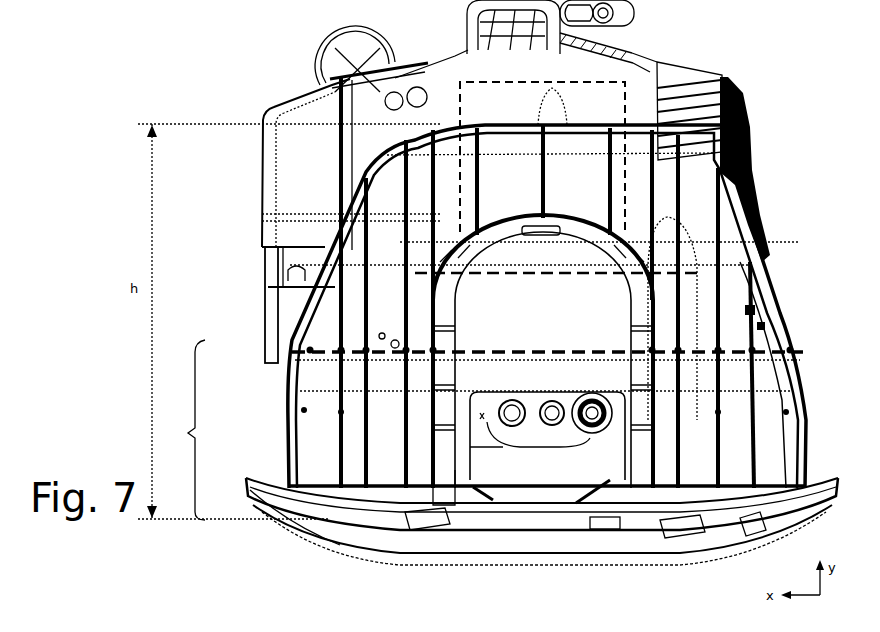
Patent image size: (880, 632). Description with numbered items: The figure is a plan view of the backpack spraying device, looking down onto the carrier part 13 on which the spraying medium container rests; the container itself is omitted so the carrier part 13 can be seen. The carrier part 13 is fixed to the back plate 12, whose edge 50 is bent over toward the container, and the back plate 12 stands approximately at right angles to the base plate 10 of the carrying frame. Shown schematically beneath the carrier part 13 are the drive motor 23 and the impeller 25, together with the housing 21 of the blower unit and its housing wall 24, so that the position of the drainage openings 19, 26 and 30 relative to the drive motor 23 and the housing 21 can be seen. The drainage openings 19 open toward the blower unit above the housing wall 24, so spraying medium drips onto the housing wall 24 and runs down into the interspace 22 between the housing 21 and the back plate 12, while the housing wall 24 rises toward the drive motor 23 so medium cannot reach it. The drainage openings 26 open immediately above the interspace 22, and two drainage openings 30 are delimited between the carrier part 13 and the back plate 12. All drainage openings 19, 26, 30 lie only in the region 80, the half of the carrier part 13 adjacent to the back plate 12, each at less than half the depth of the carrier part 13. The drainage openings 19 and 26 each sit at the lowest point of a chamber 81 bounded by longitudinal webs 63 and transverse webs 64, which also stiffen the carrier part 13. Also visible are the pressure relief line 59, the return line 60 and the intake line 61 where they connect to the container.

The base plate 10 is at (527, 210).
The back plate 12 is at (345, 552).
The carrier part 13 is at (768, 282).
The drainage openings 19 is at (405, 344).
The housing 21 is at (463, 72).
The interspace 22 is at (614, 478).
The drive motor 23 is at (608, 80).
The housing wall 24 is at (335, 365).
The impeller 25 is at (440, 268).
The drainage openings 26 is at (330, 350).
The drainage openings 30 is at (440, 510).
The edge 50 is at (300, 530).
The pressure relief line 59 is at (592, 433).
The return line 60 is at (548, 425).
The intake line 61 is at (510, 426).
The longitudinal webs 63 is at (656, 120).
The transverse webs 64 is at (793, 367).
The region 80 is at (181, 430).
The chamber 81 is at (742, 315).